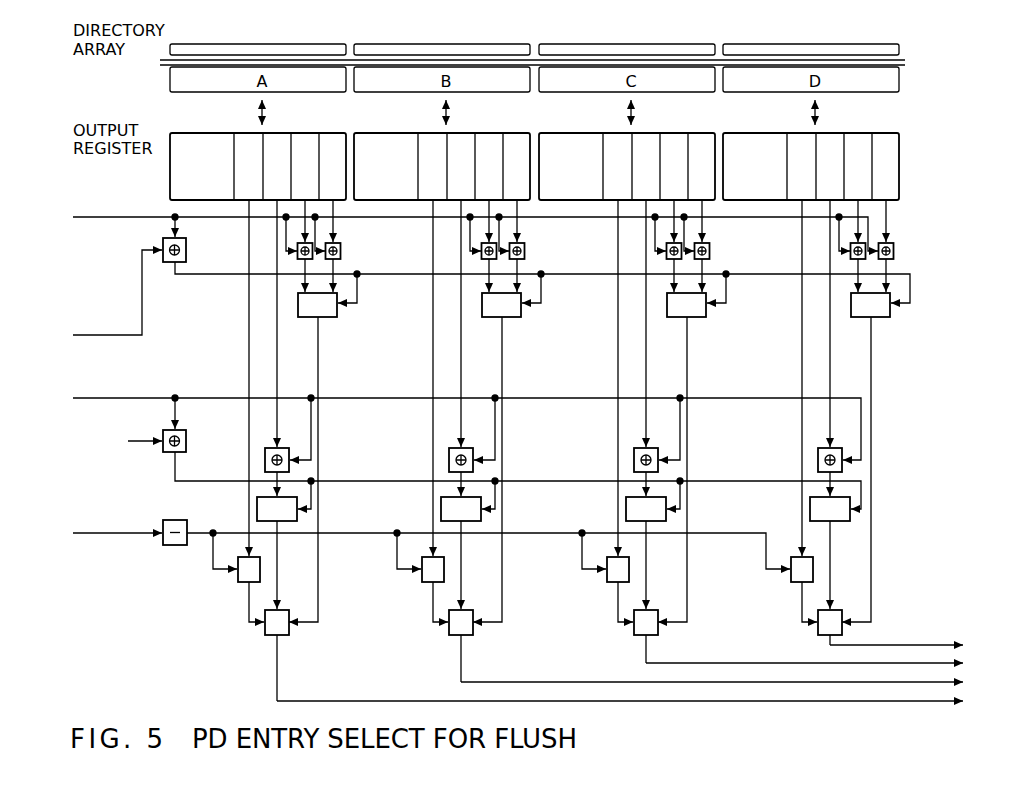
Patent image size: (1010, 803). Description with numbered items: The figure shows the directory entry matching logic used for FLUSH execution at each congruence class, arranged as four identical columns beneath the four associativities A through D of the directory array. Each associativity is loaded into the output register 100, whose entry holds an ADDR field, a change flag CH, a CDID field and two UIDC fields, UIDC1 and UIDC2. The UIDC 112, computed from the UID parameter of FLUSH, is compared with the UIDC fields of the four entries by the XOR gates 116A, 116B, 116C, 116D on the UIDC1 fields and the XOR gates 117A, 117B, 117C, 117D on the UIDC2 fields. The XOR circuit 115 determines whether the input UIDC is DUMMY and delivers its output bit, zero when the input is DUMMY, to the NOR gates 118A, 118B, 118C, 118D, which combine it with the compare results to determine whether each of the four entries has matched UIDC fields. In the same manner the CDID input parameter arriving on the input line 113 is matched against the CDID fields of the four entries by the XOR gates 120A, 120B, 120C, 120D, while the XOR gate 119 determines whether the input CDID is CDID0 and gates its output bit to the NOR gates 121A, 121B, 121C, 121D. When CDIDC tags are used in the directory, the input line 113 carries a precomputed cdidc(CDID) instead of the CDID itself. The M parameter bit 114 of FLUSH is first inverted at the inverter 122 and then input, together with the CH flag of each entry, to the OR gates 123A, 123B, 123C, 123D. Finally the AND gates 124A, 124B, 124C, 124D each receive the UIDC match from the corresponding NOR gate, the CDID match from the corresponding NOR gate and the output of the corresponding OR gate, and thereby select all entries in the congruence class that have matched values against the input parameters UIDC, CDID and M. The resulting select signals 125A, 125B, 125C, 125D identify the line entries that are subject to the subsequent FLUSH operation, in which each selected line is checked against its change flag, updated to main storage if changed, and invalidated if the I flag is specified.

The output register 100 is at (517, 166).
The UIDC 112 is at (475, 224).
The input line 113 is at (467, 419).
The M parameter bit 114 is at (117, 535).
The XOR circuit 115 is at (163, 241).
The XOR gate 116A is at (298, 262).
The XOR gate 116B is at (482, 262).
The XOR gate 116C is at (667, 262).
The XOR gate 116D is at (851, 262).
The XOR gate 117A is at (341, 251).
The XOR gate 117B is at (525, 251).
The XOR gate 117C is at (710, 251).
The XOR gate 117D is at (894, 251).
The NOR gate 118A is at (337, 316).
The NOR gate 118B is at (521, 316).
The NOR gate 118C is at (706, 316).
The NOR gate 118D is at (890, 316).
The XOR gate 119 is at (467, 452).
The XOR gate 120A is at (290, 450).
The XOR gate 120B is at (474, 450).
The XOR gate 120C is at (659, 450).
The XOR gate 120D is at (843, 450).
The NOR gate 121A is at (298, 521).
The NOR gate 121B is at (482, 521).
The NOR gate 121C is at (667, 521).
The NOR gate 121D is at (851, 521).
The inverter 122 is at (170, 548).
The OR gate 123A is at (238, 581).
The OR gate 123B is at (422, 581).
The OR gate 123C is at (607, 581).
The OR gate 123D is at (791, 581).
The AND gate 124A is at (253, 655).
The AND gate 124B is at (437, 646).
The AND gate 124C is at (622, 636).
The AND gate 124D is at (806, 631).
The selected line 125A is at (643, 696).
The selected line 125B is at (735, 677).
The selected line 125C is at (827, 658).
The selected line 125D is at (920, 640).